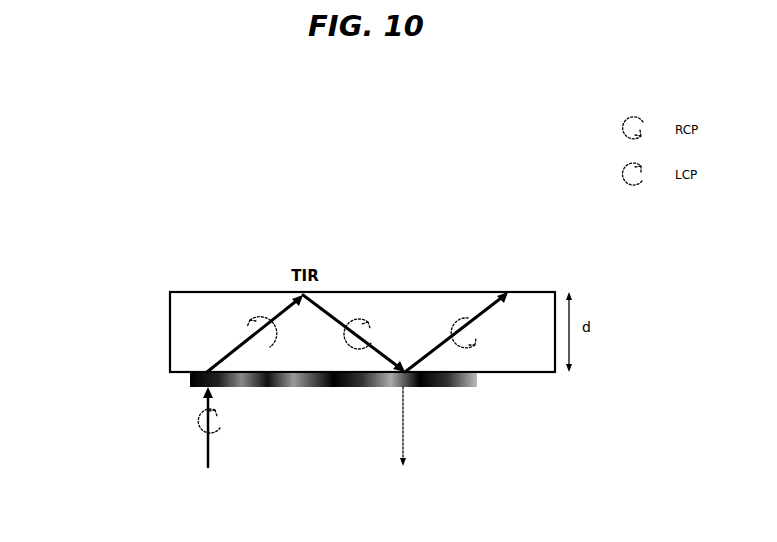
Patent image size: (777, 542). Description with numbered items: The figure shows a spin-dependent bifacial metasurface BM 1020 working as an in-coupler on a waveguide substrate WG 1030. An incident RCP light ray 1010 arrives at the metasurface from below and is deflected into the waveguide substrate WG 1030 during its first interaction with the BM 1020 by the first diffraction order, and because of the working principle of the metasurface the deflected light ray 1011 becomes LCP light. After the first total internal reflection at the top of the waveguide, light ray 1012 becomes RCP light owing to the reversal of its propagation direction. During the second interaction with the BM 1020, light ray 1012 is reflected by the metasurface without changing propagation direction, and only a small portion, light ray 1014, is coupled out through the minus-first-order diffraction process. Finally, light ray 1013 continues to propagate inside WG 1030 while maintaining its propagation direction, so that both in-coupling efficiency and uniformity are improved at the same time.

The incident RCP light ray 1010 is at (205, 450).
The deflected light ray 1011 is at (277, 292).
The light ray after first TIR 1012 is at (345, 322).
The propagating light ray 1013 is at (492, 300).
The out-coupled light ray 1014 is at (405, 438).
The spin-dependent bifacial metasurface BM 1020 is at (190, 380).
The waveguide substrate WG 1030 is at (171, 315).